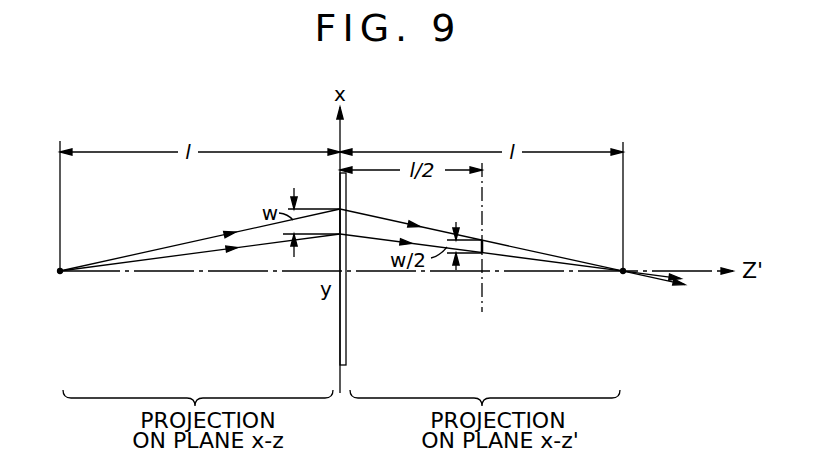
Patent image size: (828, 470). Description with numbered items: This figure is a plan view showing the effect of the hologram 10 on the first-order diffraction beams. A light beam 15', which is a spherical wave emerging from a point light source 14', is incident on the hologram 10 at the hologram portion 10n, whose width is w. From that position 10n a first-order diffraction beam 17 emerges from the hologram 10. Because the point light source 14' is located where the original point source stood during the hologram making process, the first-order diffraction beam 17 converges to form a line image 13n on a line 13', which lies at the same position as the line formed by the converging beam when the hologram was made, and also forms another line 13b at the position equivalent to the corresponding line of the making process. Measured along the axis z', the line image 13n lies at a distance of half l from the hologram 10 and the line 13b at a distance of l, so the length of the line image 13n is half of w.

The point light source 14' is at (53, 289).
The light beam 15' is at (200, 238).
The hologram 10 is at (346, 183).
The hologram portion 10n is at (338, 221).
The first-order diffraction beam 17 is at (391, 221).
The line image 13n is at (485, 245).
The line 13b is at (628, 264).
The line 13' is at (502, 241).